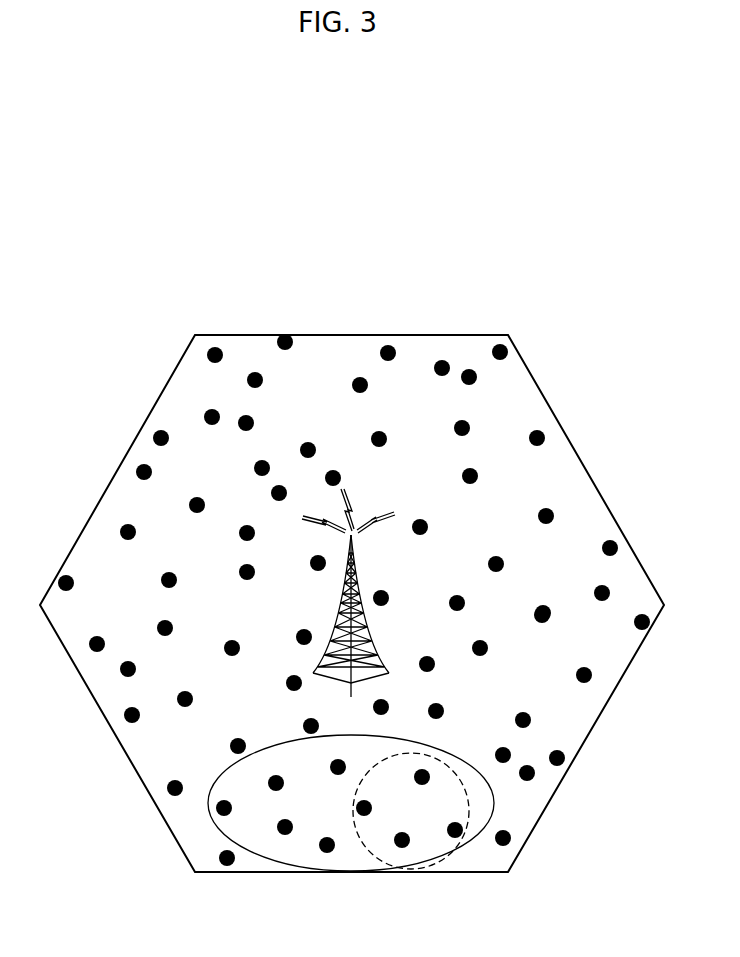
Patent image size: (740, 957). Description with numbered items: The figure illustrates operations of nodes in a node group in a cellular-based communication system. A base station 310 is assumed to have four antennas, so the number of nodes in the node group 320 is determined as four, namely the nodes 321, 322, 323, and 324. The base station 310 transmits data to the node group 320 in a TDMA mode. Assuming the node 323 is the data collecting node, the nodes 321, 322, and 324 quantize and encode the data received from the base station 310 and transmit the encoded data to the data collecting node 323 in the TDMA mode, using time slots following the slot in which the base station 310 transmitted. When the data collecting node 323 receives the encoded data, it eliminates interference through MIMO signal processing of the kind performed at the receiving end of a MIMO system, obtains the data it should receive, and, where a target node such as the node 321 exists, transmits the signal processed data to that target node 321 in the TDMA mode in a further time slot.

The base station 310 is at (358, 578).
The node group 320 is at (472, 812).
The node 321 is at (364, 810).
The node 322 is at (422, 777).
The data collecting node 323 is at (457, 834).
The node 324 is at (402, 843).